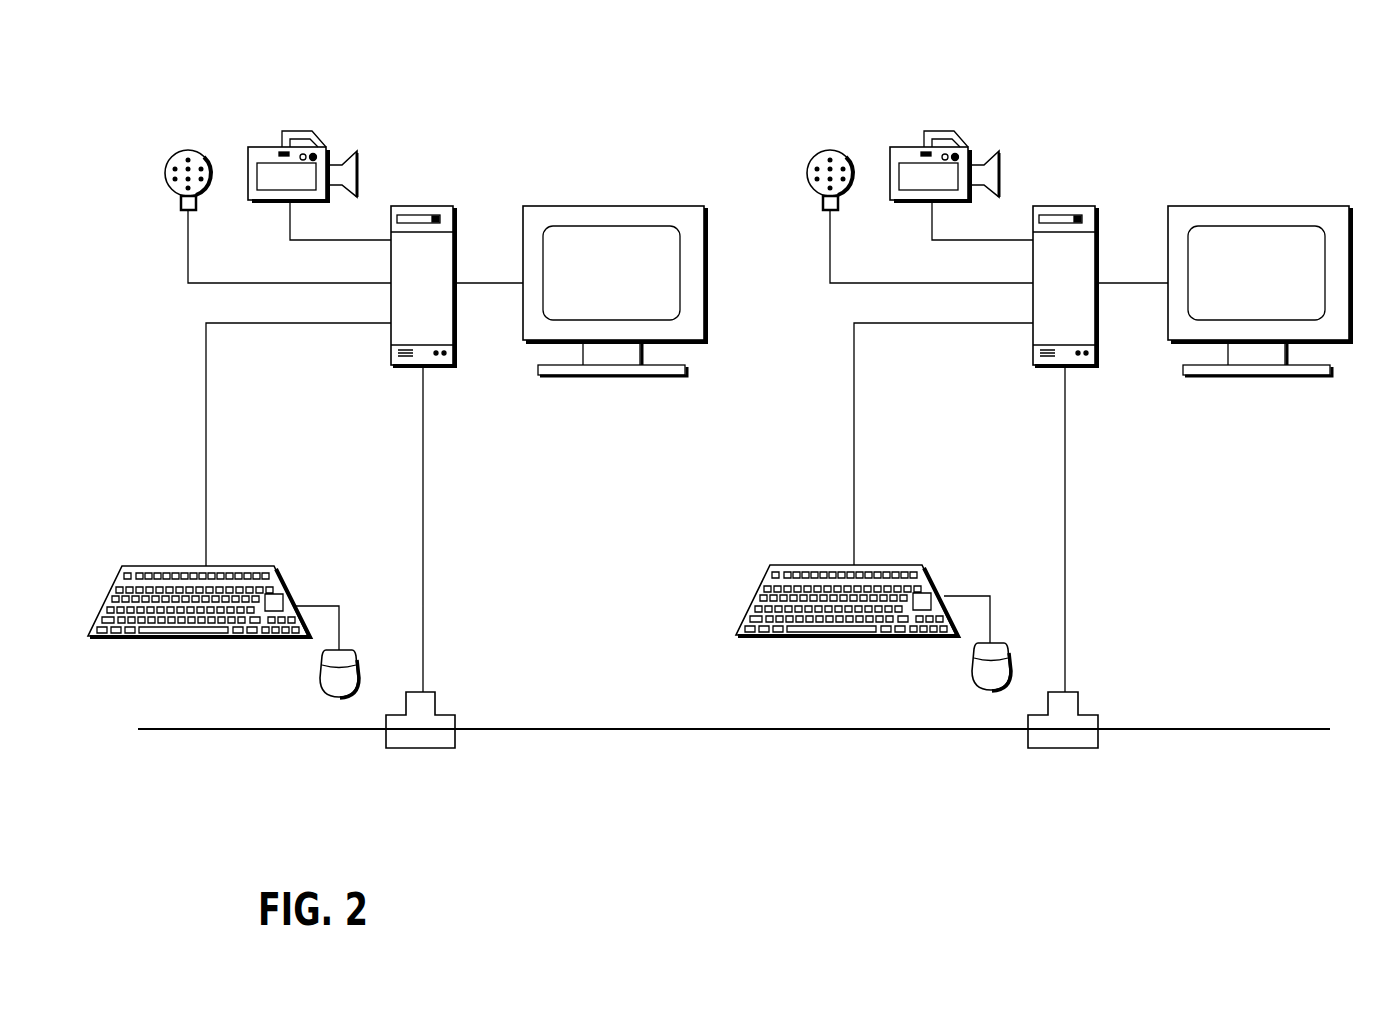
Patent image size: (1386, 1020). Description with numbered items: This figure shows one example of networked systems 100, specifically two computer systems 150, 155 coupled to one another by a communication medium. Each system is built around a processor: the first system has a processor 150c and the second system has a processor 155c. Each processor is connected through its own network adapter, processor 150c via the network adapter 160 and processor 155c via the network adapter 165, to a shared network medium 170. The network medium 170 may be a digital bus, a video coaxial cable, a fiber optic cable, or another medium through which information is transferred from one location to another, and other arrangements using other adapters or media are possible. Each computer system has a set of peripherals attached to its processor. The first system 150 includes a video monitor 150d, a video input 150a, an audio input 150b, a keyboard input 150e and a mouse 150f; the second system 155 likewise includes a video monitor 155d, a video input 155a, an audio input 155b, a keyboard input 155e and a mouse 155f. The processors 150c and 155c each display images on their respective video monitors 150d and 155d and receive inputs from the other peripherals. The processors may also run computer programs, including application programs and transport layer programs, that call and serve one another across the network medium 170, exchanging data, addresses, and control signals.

The networked computer system 100 is at (814, 787).
The computer system 150 is at (585, 127).
The video input 150a is at (323, 141).
The audio input 150b is at (208, 156).
The processor 150c is at (421, 205).
The video monitor 150d is at (672, 205).
The keyboard input 150e is at (267, 566).
The mouse 150f is at (357, 652).
The computer system 155 is at (1200, 121).
The video input 155a is at (965, 140).
The audio input 155b is at (851, 156).
The processor 155c is at (1063, 205).
The video monitor 155d is at (1312, 205).
The keyboard input 155e is at (916, 565).
The mouse 155f is at (1010, 650).
The network adapter 160 is at (447, 715).
The network adapter 165 is at (1090, 715).
The network medium 170 is at (640, 728).